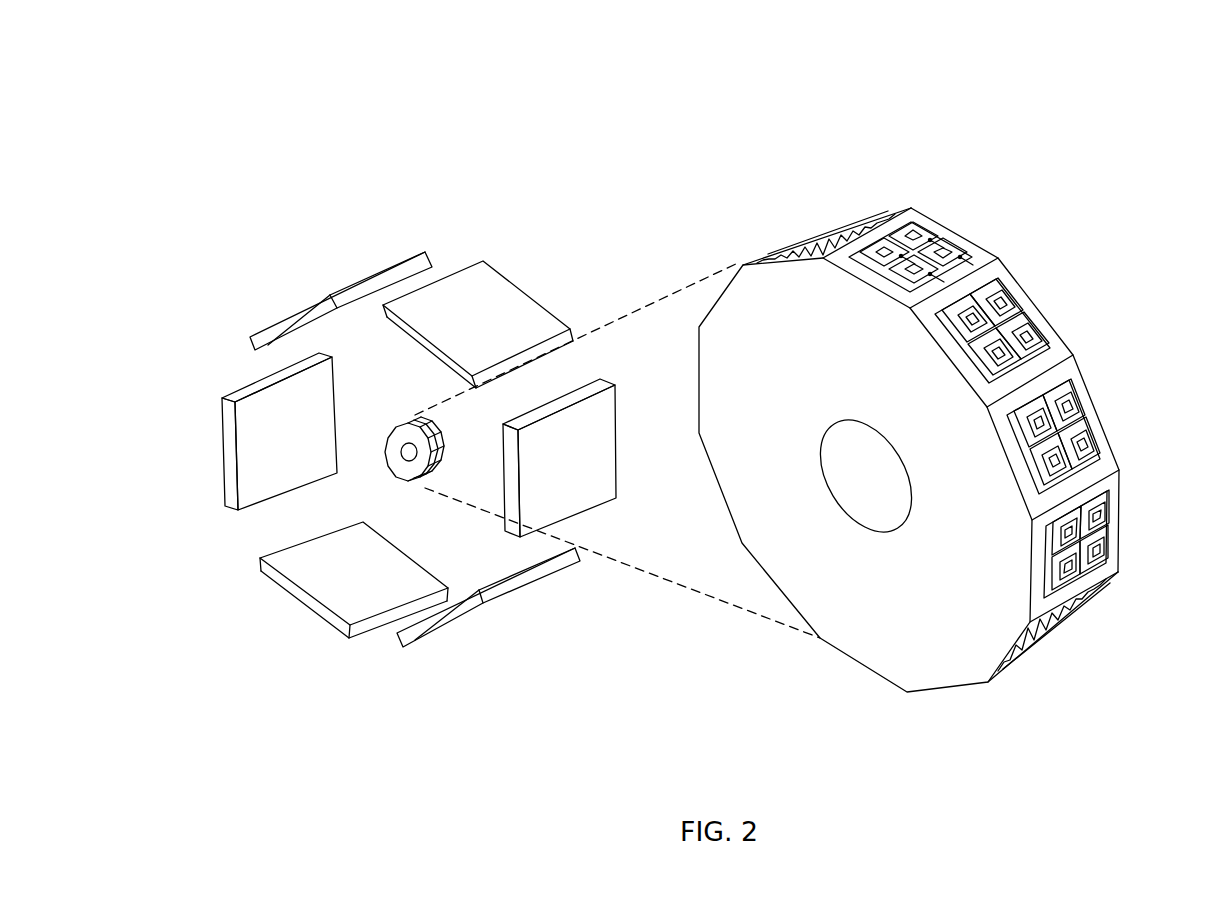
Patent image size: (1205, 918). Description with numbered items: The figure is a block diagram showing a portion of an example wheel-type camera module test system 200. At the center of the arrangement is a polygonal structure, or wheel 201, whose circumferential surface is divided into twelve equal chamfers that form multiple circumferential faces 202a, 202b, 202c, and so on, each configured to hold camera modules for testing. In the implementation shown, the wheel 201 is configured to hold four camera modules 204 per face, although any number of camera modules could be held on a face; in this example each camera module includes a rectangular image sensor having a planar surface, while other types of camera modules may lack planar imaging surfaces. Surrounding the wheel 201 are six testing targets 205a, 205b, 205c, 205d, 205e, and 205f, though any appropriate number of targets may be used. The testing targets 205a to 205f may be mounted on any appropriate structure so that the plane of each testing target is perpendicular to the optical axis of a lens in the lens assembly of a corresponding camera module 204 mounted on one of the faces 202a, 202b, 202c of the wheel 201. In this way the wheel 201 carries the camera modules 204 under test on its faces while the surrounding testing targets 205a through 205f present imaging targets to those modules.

The test system 200 is at (646, 151).
The wheel 201 is at (392, 425).
The circumferential face 202a is at (937, 184).
The circumferential face 202b is at (1117, 449).
The circumferential face 202c is at (1120, 553).
The camera modules 204 is at (1020, 265).
The testing target 205a is at (554, 275).
The testing target 205b is at (613, 428).
The testing target 205c is at (533, 590).
The testing target 205d is at (262, 558).
The testing target 205e is at (235, 393).
The testing target 205f is at (392, 266).